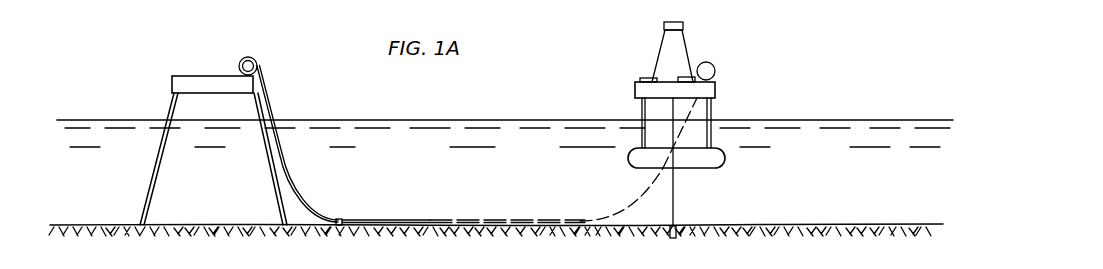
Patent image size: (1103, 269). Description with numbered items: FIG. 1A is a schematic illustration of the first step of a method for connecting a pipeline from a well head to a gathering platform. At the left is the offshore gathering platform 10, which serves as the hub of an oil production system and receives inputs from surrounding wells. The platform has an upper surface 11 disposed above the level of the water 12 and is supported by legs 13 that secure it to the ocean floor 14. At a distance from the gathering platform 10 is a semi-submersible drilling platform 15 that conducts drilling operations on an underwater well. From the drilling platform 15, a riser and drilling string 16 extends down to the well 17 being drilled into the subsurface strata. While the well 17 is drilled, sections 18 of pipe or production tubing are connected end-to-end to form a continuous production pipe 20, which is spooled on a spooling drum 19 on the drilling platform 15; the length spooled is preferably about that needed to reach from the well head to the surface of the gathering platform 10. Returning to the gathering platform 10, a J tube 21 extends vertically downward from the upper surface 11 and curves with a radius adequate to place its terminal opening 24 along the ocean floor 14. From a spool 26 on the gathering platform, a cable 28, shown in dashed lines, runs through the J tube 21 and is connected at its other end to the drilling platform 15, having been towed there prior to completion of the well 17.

The offshore gathering platform 10 is at (195, 130).
The upper surface 11 is at (204, 74).
The water 12 is at (427, 118).
The legs 13 is at (147, 182).
The ocean floor 14 is at (210, 224).
The drilling platform 15 is at (686, 85).
The riser and drilling string 16 is at (675, 195).
The well 17 is at (676, 237).
The sections of pipe 18 is at (645, 78).
The spooling drum 19 is at (715, 66).
The continuous production pipe 20 is at (686, 77).
The J tube 21 is at (303, 208).
The terminal opening 24 is at (343, 220).
The spool 26 is at (257, 62).
The cable 28 is at (472, 219).